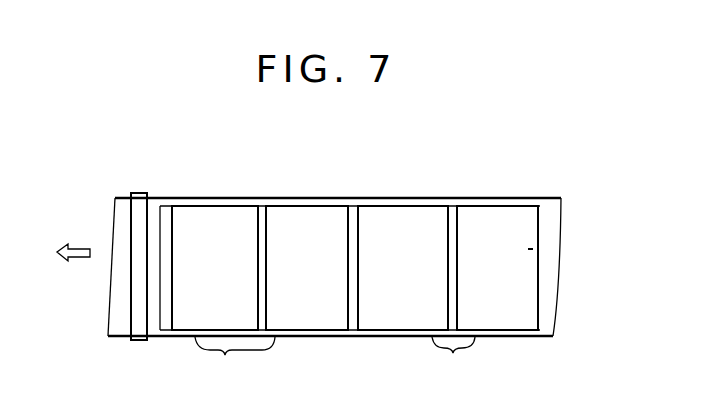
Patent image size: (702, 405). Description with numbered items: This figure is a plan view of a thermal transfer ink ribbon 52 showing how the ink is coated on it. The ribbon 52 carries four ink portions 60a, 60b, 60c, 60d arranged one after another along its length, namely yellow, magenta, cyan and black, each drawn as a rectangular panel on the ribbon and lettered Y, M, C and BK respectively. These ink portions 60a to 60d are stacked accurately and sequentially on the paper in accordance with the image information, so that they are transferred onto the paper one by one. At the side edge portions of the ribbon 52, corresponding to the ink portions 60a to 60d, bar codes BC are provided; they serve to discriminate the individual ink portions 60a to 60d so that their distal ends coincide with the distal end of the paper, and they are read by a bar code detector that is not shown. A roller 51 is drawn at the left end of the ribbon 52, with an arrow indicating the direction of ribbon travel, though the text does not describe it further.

The ribbon 52 is at (455, 199).
The roller 51 is at (142, 342).
The ink portion 60a is at (213, 215).
The ink portion 60b is at (304, 215).
The ink portion 60c is at (398, 215).
The ink portion 60d is at (510, 216).
The bar codes BC is at (335, 359).